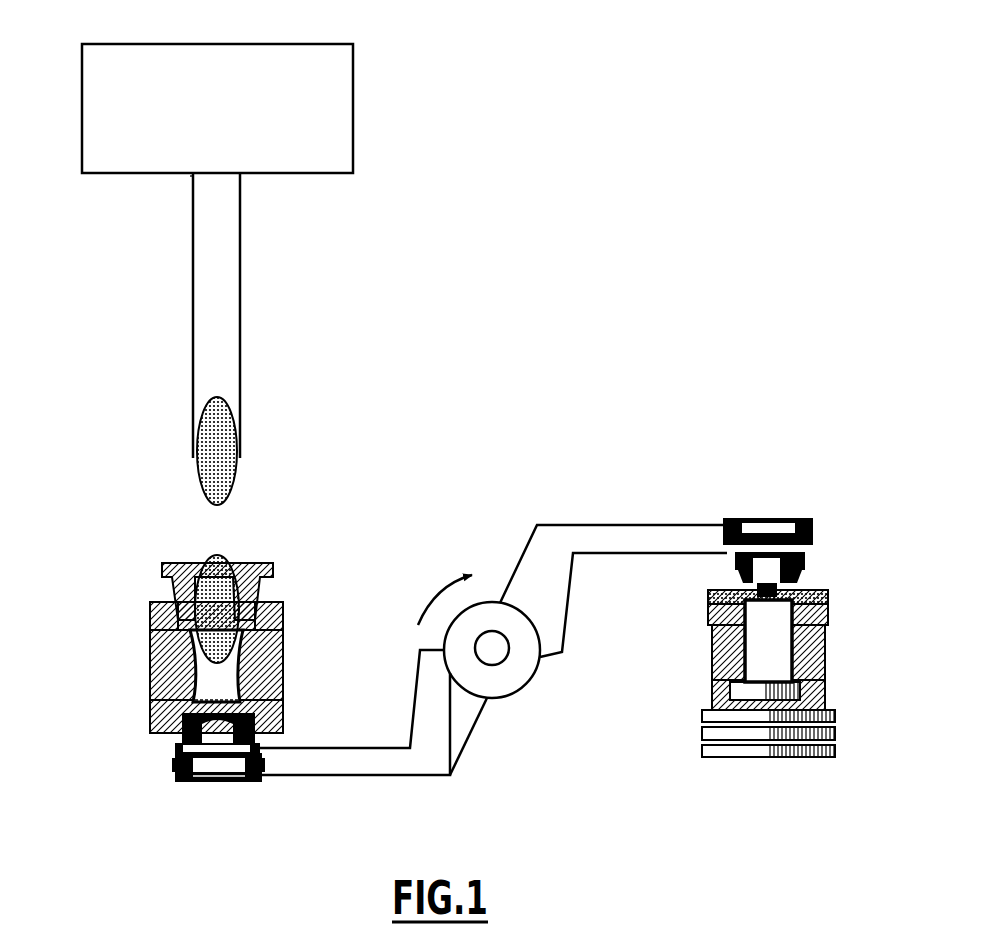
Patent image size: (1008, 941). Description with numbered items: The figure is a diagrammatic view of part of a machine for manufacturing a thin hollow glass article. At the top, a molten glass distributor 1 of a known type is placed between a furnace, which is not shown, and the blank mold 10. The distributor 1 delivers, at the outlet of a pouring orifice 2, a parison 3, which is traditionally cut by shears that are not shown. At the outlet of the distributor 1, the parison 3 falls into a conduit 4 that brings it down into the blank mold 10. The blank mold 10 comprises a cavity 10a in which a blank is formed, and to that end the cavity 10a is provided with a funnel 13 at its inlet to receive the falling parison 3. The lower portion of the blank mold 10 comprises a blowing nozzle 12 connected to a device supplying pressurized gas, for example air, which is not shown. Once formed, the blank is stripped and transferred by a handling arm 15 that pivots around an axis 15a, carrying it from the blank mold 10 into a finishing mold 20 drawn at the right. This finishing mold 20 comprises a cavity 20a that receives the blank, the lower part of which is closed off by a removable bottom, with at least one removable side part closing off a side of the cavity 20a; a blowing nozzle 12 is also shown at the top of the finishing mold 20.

The molten glass distributor 1 is at (335, 112).
The pouring orifice 2 is at (190, 175).
The parison 3 is at (210, 470).
The conduit 4 is at (190, 345).
The blank mold 10 is at (148, 630).
The cavity of the blank mold 10a is at (210, 676).
The blowing nozzle 12 is at (172, 741).
The funnel 13 is at (162, 566).
The handling arm 15 is at (535, 705).
The axis 15a is at (485, 647).
The finishing mold 20 is at (832, 620).
The cavity of the finishing mold 20a is at (775, 662).